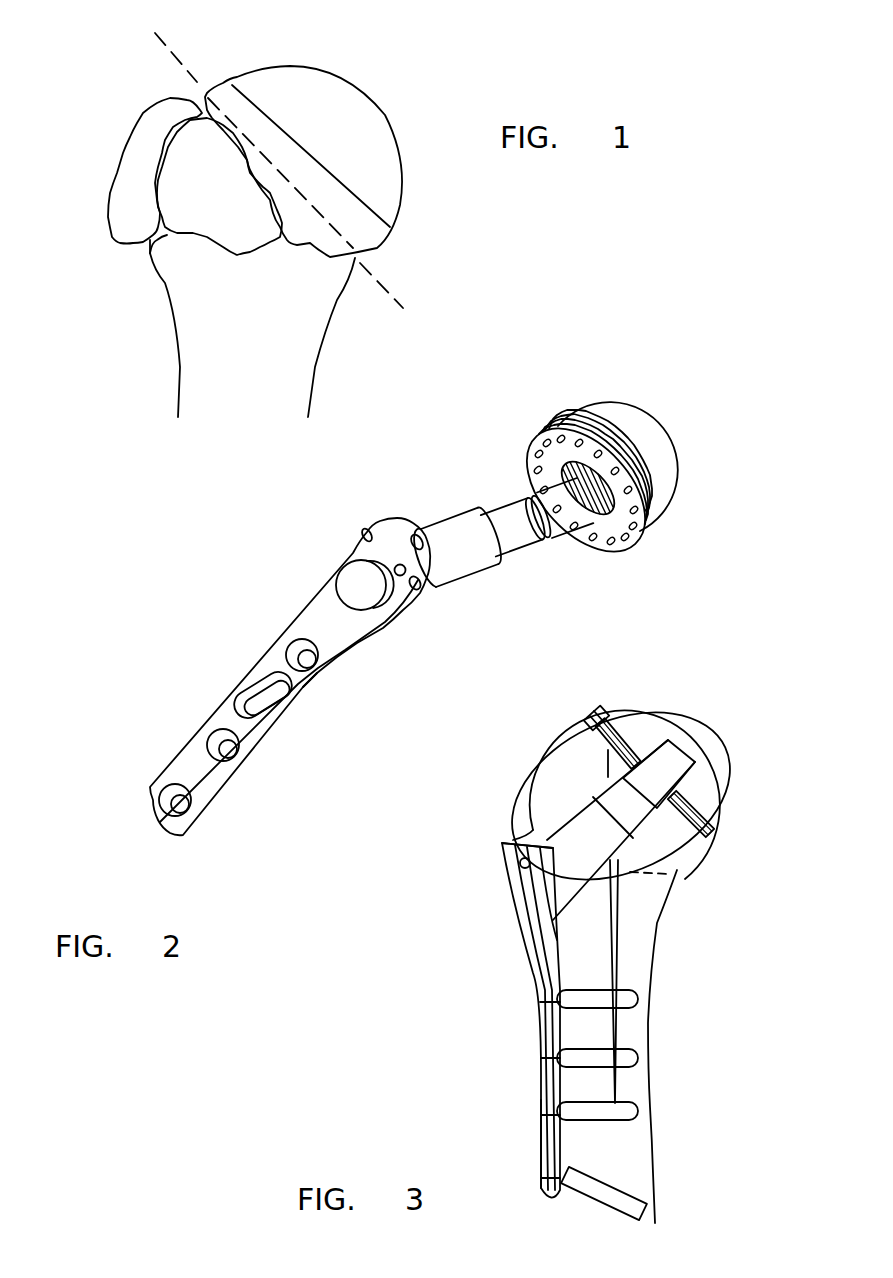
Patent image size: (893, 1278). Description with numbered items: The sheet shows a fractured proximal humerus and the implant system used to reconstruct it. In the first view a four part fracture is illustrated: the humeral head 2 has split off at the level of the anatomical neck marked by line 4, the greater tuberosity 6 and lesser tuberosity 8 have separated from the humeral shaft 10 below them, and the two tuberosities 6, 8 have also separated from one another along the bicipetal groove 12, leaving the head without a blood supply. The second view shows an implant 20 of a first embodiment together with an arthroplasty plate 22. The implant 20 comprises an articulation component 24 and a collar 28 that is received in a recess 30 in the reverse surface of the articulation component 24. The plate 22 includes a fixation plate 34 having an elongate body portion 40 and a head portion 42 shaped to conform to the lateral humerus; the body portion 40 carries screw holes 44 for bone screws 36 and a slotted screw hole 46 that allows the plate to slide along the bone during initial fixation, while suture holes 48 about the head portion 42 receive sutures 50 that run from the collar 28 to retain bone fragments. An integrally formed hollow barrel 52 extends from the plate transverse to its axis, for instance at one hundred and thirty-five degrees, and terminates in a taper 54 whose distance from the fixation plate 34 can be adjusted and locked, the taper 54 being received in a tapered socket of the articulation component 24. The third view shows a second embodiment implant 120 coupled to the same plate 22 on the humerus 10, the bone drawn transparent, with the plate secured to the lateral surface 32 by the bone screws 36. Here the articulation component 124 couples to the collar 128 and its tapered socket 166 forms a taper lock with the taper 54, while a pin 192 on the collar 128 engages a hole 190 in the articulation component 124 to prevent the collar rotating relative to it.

In FIG. 1, the humeral head 2 is at (348, 125).
In FIG. 1, the line 4 is at (189, 73).
In FIG. 1, the greater tuberosity 6 is at (143, 142).
In FIG. 1, the lesser tuberosity 8 is at (183, 183).
In FIG. 1, the humeral shaft 10 is at (280, 337).
In FIG. 3, the humeral shaft 10 is at (645, 940).
In FIG. 1, the bicipetal groove 12 is at (158, 215).
In FIG. 2, the implant 20 is at (497, 433).
In FIG. 2, the arthroplasty plate 22 is at (274, 662).
In FIG. 3, the arthroplasty plate 22 is at (513, 953).
In FIG. 2, the articulation component 24 is at (650, 445).
In FIG. 2, the collar 28 is at (538, 473).
In FIG. 2, the recess 30 is at (573, 412).
In FIG. 3, the lateral surface 32 is at (538, 1030).
In FIG. 2, the fixation plate 34 is at (328, 620).
In FIG. 3, the bone screws 36 is at (637, 995).
In FIG. 2, the elongate body portion 40 is at (298, 682).
In FIG. 2, the head portion 42 is at (387, 552).
In FIG. 2, the screw holes 44 is at (290, 653).
In FIG. 2, the slotted screw hole 46 is at (267, 702).
In FIG. 2, the suture holes 48 is at (365, 533).
In FIG. 3, the sutures 50 is at (530, 817).
In FIG. 2, the hollow barrel 52 is at (458, 538).
In FIG. 2, the taper 54 is at (558, 520).
In FIG. 3, the taper 54 is at (668, 765).
In FIG. 3, the humeral head implant 120 is at (732, 787).
In FIG. 3, the articulation component 124 is at (660, 730).
In FIG. 3, the collar 128 is at (600, 777).
In FIG. 3, the socket 166 is at (693, 775).
In FIG. 3, the hole 190 is at (635, 717).
In FIG. 3, the pin 192 is at (612, 720).